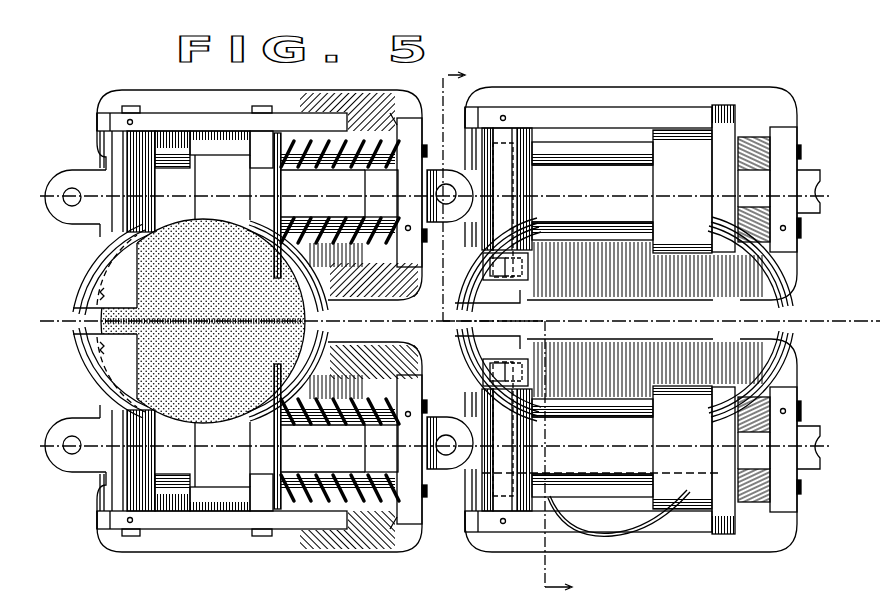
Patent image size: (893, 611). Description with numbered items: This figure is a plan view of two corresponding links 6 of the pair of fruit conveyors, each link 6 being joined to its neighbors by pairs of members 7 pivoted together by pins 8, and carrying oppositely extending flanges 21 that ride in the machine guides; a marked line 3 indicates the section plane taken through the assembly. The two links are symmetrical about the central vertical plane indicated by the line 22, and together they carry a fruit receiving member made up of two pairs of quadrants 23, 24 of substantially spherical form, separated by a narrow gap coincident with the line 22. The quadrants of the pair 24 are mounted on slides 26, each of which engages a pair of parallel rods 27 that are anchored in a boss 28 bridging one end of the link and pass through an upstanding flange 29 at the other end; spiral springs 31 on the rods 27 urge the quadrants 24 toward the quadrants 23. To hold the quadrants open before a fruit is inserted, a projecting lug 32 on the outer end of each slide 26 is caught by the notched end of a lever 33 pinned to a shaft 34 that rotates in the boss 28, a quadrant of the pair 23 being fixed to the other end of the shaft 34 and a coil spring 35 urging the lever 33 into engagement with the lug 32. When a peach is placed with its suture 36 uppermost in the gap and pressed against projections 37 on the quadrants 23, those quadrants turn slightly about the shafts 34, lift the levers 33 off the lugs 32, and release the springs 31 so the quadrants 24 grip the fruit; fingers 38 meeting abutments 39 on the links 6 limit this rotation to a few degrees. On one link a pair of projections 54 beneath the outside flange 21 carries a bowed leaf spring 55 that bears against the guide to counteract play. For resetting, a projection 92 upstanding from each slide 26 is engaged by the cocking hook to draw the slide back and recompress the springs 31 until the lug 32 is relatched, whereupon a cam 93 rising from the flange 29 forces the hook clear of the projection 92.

The section line 3- 3 is at (499, 330).
The link 6 is at (368, 546).
The member 7 is at (462, 221).
The pin 8 is at (447, 184).
The flange 21 is at (192, 98).
The line 22 is at (70, 321).
The pair of quadrants 23 is at (87, 296).
The pair of quadrants 24 is at (323, 327).
The slide 26 is at (200, 205).
The rod 27 is at (355, 160).
The boss 28 is at (142, 186).
The flange 29 is at (425, 236).
The spiral spring 31 is at (337, 162).
The lug 32 is at (270, 106).
The lever 33 is at (235, 112).
The shaft 34 is at (128, 105).
The coil spring 35 is at (500, 278).
The suture 36 is at (202, 300).
The projection 37 is at (105, 296).
The finger 38 is at (97, 118).
The abutment 39 is at (100, 140).
The projection 54 is at (565, 478).
The leaf spring 55 is at (640, 538).
The projection 92 is at (278, 186).
The cam 93 is at (410, 137).